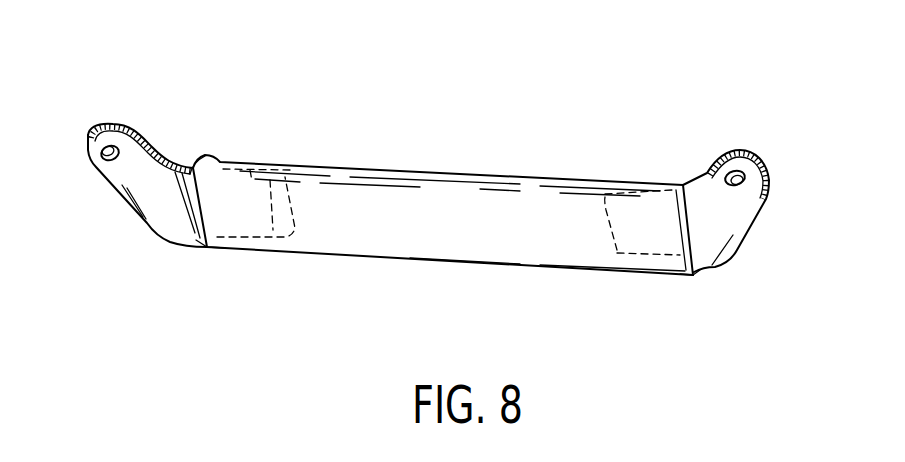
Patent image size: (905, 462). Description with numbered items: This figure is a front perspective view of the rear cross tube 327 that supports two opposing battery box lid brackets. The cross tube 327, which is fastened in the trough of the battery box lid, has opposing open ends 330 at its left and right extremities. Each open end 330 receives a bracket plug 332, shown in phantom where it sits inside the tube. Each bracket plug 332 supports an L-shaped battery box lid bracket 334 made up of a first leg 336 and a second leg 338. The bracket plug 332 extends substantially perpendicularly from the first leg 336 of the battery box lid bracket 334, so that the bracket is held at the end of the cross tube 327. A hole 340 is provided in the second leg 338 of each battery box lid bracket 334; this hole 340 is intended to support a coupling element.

The cross tube 327 is at (383, 188).
The open ends 330 is at (209, 248).
The bracket plug 332 is at (260, 160).
The battery box lid bracket 334 is at (110, 234).
The first leg 336 is at (193, 165).
The second leg 338 is at (88, 134).
The hole 340 is at (108, 157).